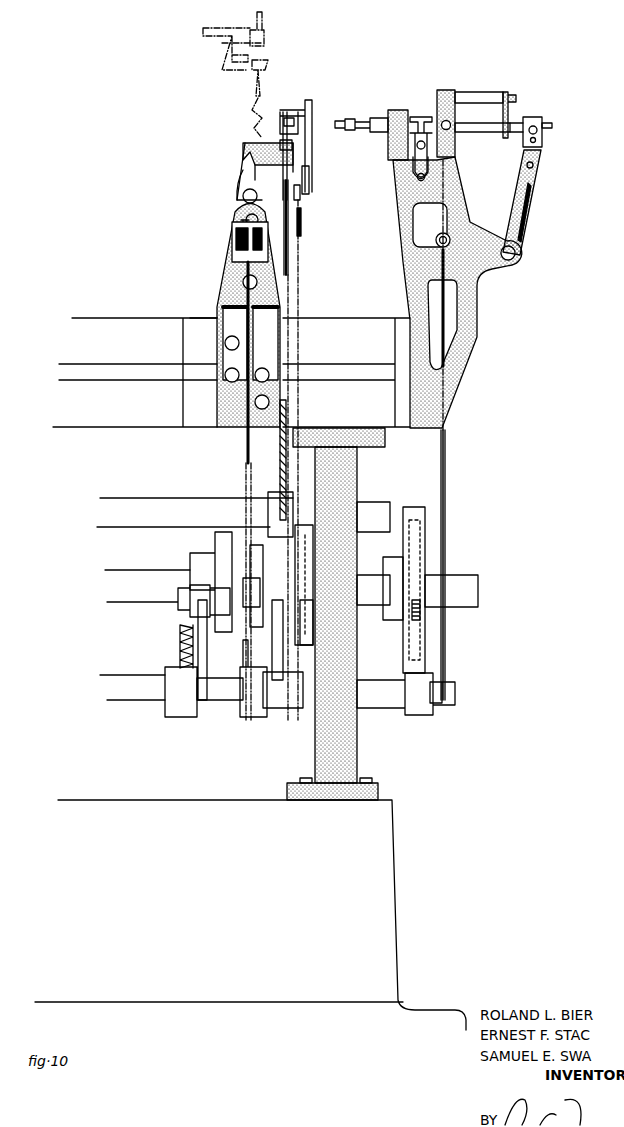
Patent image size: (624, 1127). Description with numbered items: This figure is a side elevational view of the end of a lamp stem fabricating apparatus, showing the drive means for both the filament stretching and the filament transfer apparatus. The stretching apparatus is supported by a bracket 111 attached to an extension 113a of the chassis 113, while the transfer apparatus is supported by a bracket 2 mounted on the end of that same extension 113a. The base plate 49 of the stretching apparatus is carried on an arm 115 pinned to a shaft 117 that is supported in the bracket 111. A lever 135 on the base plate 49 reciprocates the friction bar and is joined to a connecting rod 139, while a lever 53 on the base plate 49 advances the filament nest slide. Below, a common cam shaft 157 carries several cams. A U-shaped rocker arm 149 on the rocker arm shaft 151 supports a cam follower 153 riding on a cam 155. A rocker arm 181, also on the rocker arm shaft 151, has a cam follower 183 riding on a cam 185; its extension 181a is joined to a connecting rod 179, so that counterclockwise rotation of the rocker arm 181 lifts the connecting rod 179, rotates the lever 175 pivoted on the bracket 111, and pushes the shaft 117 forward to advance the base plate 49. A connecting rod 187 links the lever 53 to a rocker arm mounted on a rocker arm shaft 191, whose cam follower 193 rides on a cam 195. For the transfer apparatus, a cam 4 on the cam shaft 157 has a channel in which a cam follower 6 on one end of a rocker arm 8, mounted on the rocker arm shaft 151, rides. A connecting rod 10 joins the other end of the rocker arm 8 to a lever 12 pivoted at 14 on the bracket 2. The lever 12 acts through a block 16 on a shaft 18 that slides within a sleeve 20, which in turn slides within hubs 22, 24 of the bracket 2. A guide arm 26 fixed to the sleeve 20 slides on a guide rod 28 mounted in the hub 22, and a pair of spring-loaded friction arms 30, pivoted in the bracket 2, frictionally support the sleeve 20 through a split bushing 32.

The bracket 2 is at (473, 300).
The cam 4 is at (424, 535).
The cam follower 6 is at (415, 625).
The rocker arm 8 is at (420, 714).
The connecting rod 10 is at (443, 440).
The lever 12 is at (533, 172).
The pivot 14 is at (516, 258).
The block 16 is at (533, 118).
The shaft 18 is at (549, 122).
The sleeve 20 is at (480, 132).
The hub 22 is at (449, 91).
The hub 24 is at (402, 110).
The guide arm 26 is at (508, 94).
The guide rod 28 is at (478, 99).
The spring-loaded friction arms 30 is at (414, 164).
The split bushing 32 is at (422, 117).
The base plate 49 is at (312, 102).
The lever 53 is at (308, 190).
The bracket 111 is at (223, 282).
The chassis 113 is at (141, 318).
The extension 113a is at (206, 318).
The arm 115 is at (256, 142).
The shaft 117 is at (243, 197).
The lever 135 is at (291, 172).
The connecting rod 139 is at (290, 262).
The rocker arm 149 is at (266, 716).
The rocker arm shaft 151 is at (138, 702).
The cam follower 153 is at (253, 580).
The cam 155 is at (251, 545).
The cam shaft 157 is at (147, 602).
The lever 175 is at (242, 232).
The connecting rod 179 is at (244, 448).
The rocker arm 181 is at (198, 718).
The extension 181a is at (220, 701).
The cam follower 183 is at (232, 622).
The cam 185 is at (217, 538).
The connecting rod 187 is at (302, 228).
The rocker arm shaft 191 is at (165, 498).
The cam follower 193 is at (306, 625).
The cam 195 is at (303, 581).